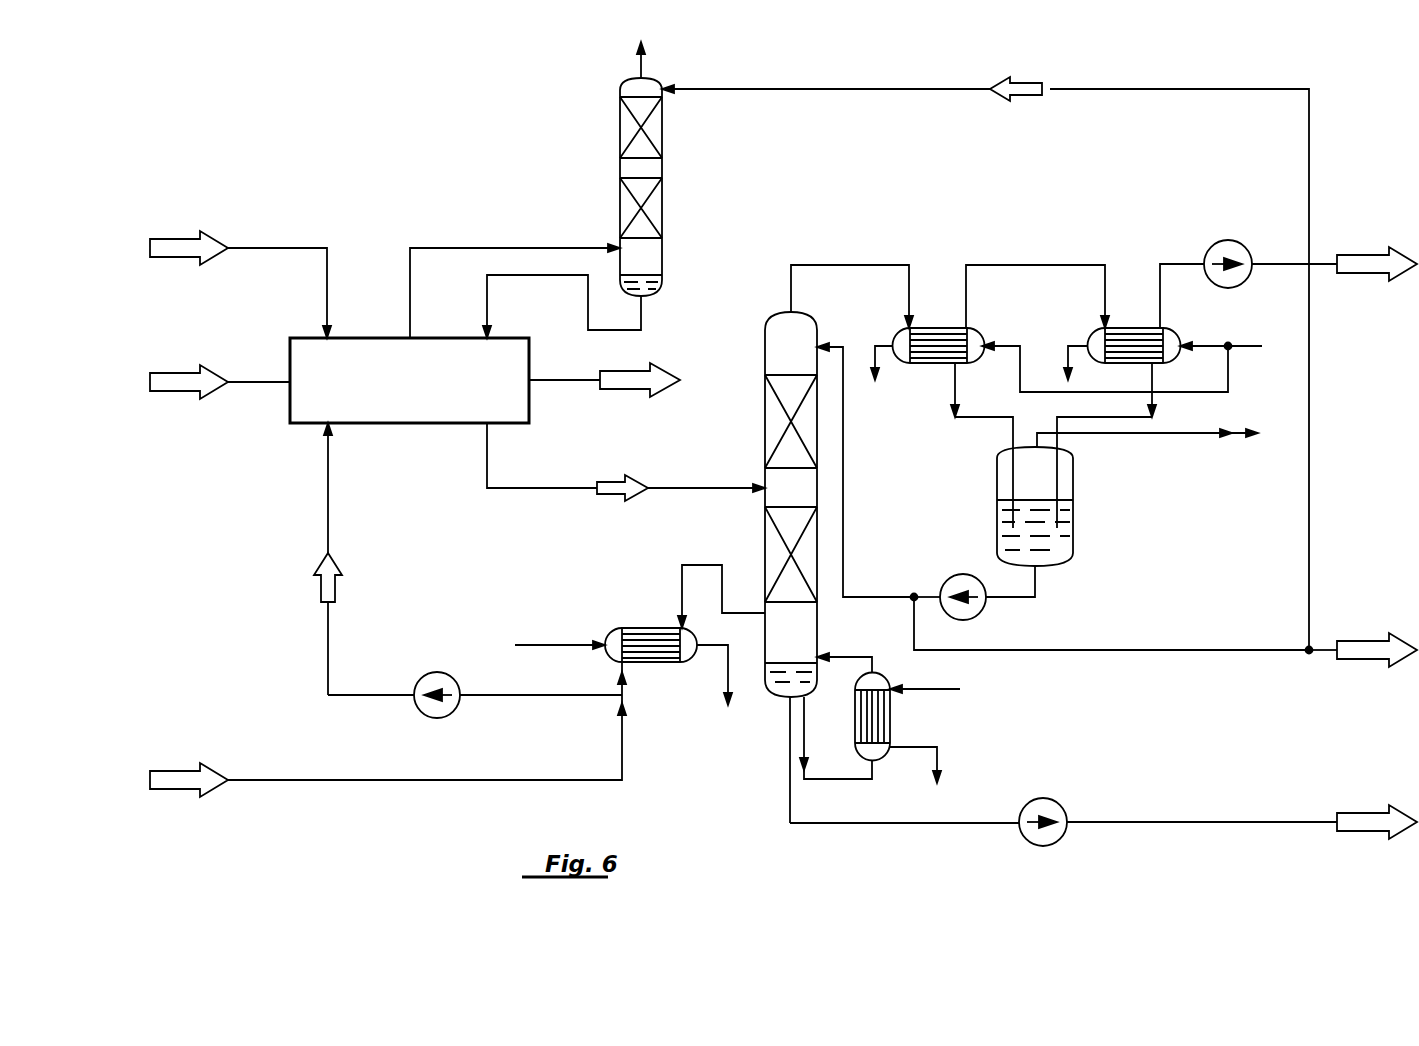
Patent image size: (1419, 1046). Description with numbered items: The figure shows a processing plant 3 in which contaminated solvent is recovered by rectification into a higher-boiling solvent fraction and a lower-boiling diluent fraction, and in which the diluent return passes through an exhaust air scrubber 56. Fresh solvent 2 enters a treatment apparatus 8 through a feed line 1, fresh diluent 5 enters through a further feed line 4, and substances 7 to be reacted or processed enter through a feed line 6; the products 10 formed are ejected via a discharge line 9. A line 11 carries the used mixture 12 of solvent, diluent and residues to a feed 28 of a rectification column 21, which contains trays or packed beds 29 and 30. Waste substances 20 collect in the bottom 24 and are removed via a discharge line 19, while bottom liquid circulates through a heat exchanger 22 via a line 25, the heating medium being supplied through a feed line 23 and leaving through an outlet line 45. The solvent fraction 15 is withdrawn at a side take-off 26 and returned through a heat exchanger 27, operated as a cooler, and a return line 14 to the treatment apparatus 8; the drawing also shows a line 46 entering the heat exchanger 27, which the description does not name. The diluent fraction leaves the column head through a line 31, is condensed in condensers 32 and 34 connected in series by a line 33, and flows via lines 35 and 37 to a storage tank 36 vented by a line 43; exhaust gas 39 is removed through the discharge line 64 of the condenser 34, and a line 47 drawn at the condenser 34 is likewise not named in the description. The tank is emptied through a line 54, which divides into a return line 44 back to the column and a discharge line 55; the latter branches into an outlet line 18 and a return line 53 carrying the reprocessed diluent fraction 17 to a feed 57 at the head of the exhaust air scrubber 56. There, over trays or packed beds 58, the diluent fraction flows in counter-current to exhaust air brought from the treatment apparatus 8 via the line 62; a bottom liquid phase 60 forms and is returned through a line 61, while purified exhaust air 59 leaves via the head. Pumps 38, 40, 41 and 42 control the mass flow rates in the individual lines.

The feed line 1 is at (356, 782).
The fresh solvent 2 is at (180, 778).
The processing plant 3 is at (380, 122).
The feed line 4 is at (300, 247).
The fresh diluent 5 is at (180, 247).
The feed line 6 is at (280, 382).
The substances to be reacted and/or processed 7 is at (182, 384).
The treatment apparatus 8 is at (297, 409).
The discharge line 9 is at (580, 379).
The products 10 is at (626, 385).
The line 11 is at (492, 491).
The used mixture 12 is at (621, 490).
The return line 14 is at (350, 696).
The solvent fraction 15 is at (322, 588).
The reprocessed diluent fraction 17 is at (1019, 93).
The outlet line 18 is at (1318, 652).
The discharge line 19 is at (1281, 821).
The waste substances 20 is at (1376, 825).
The rectification column 21 is at (763, 430).
The heat exchanger 22 is at (878, 733).
The feed line 23 is at (935, 689).
The bottom 24 is at (782, 700).
The line 25 is at (866, 657).
The side take-off 26 is at (745, 612).
The heat exchanger 27 is at (660, 638).
The feed 28 is at (763, 487).
The trays and/or packed beds 29 is at (792, 525).
The trays and/or packed beds 30 is at (772, 407).
The line 31 is at (853, 265).
The condenser 32 is at (936, 362).
The line 33 is at (1046, 265).
The condenser 34 is at (1098, 340).
The line 35 is at (986, 420).
The storage tank 36 is at (1000, 530).
The line 37 is at (1112, 420).
The pump 38 is at (1232, 245).
The exhaust gas 39 is at (1363, 266).
The pump 40 is at (952, 582).
The pump 41 is at (1040, 810).
The pump 42 is at (440, 684).
The line 43 is at (1175, 435).
The return line 44 is at (844, 468).
The outlet line 45 is at (937, 760).
The heating medium inlet 46 is at (577, 645).
The coolant inlet 47 is at (1243, 345).
The return line 53 is at (1160, 88).
The line 54 is at (1040, 590).
The discharge line 55 is at (1105, 651).
The exhaust air scrubber 56 is at (652, 168).
The feed 57 is at (662, 88).
The trays or packed beds 58 is at (628, 128).
The purified exhaust air 59 is at (641, 60).
The bottom liquid phase 60 is at (662, 285).
The line 61 is at (641, 324).
The line 62 is at (500, 247).
The discharge line 64 is at (1189, 263).